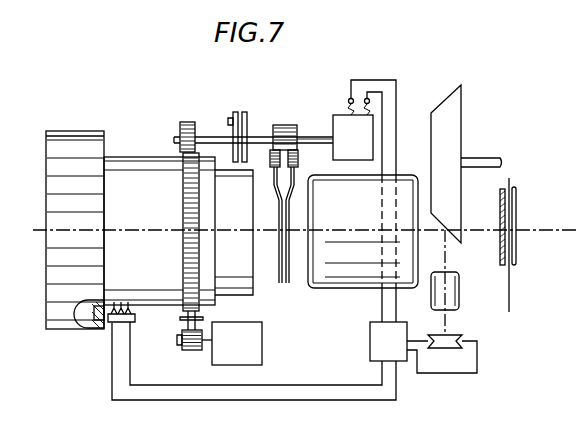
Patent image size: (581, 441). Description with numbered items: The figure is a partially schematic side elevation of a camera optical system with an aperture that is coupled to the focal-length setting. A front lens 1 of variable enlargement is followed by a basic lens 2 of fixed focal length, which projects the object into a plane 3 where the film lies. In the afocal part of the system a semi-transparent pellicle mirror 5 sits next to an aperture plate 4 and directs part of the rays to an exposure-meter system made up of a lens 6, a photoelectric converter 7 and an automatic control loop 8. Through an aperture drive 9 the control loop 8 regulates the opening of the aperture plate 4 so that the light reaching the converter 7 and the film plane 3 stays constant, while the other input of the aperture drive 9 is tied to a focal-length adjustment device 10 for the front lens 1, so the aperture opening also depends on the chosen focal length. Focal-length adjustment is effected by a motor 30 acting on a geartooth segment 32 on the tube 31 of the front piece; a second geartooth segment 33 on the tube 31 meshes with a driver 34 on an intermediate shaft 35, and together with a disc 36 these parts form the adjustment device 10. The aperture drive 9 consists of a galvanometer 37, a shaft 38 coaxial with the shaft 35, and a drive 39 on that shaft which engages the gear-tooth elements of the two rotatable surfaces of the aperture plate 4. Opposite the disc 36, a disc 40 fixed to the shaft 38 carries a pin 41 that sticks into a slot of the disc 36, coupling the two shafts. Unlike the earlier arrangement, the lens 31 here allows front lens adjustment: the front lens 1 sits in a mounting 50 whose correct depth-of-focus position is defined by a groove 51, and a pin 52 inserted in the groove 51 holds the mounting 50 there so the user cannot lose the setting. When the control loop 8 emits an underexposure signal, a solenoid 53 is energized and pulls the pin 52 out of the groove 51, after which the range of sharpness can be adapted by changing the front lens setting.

The front lens 1 is at (118, 113).
The basic lens 2 is at (343, 225).
The plane 3 is at (510, 295).
The aperture plate 4 is at (283, 286).
The pellicle mirror 5 is at (452, 118).
The lens 6 is at (459, 292).
The photoelectric converter 7 is at (455, 337).
The automatic control loop 8 is at (294, 361).
The aperture drive 9 is at (299, 100).
The focal-length adjustment device 10 is at (203, 94).
The motor 30 is at (246, 356).
The tube 31 is at (155, 210).
The geartooth segment 32 is at (190, 274).
The geartooth segment 33 is at (176, 332).
The driver 34 is at (180, 126).
The intermediate shaft 35 is at (206, 139).
The disc 36 is at (236, 112).
The galvanometer 37 is at (362, 150).
The shaft 38 is at (310, 137).
The drive 39 is at (285, 125).
The disc 40 is at (246, 112).
The pin 41 is at (232, 119).
The mounting 50 is at (68, 143).
The groove 51 is at (92, 325).
The pin 52 is at (106, 323).
The solenoid 53 is at (123, 324).